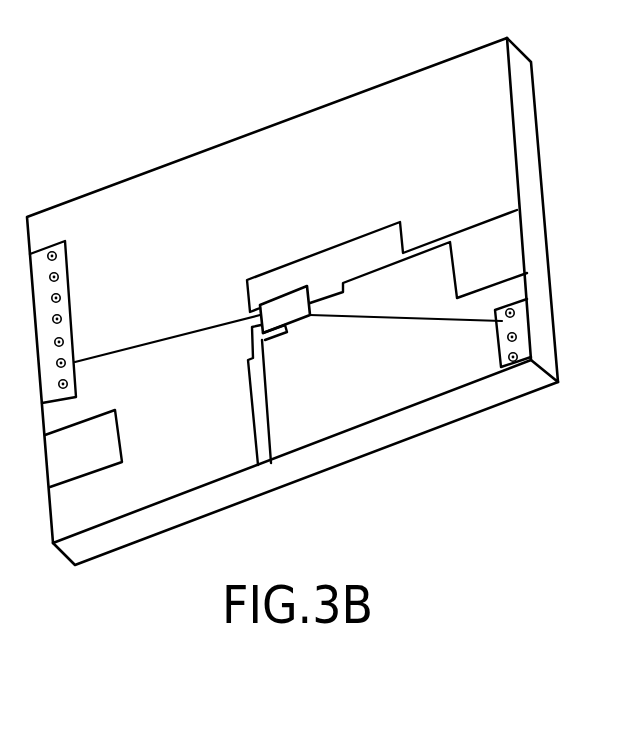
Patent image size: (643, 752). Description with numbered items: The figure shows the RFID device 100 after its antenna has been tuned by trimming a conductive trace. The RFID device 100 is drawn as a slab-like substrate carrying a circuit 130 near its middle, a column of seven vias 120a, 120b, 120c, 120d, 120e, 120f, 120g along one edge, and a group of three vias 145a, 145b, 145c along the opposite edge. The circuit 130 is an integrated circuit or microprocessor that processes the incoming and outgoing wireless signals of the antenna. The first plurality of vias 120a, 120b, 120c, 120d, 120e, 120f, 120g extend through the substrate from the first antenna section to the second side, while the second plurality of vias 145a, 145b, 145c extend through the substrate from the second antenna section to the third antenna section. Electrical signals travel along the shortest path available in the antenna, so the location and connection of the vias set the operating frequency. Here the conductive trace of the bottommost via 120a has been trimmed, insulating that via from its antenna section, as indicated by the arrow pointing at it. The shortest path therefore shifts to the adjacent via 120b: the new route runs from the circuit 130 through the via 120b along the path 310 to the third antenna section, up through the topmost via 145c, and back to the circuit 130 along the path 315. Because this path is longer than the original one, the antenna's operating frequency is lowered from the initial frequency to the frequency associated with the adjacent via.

The RFID device 100 is at (105, 166).
The bottommost via 120a is at (69, 383).
The via adjacent to trimmed via 120b is at (67, 362).
The via 120c is at (65, 340).
The via 120d is at (63, 317).
The via 120e is at (61, 296).
The via 120f is at (59, 275).
The via 120g is at (57, 253).
The circuit 130 is at (285, 288).
The electrical path 310 is at (215, 326).
The electrical path 315 is at (388, 322).
The via 145a is at (517, 357).
The via 145b is at (516, 337).
The topmost via 145c is at (514, 312).